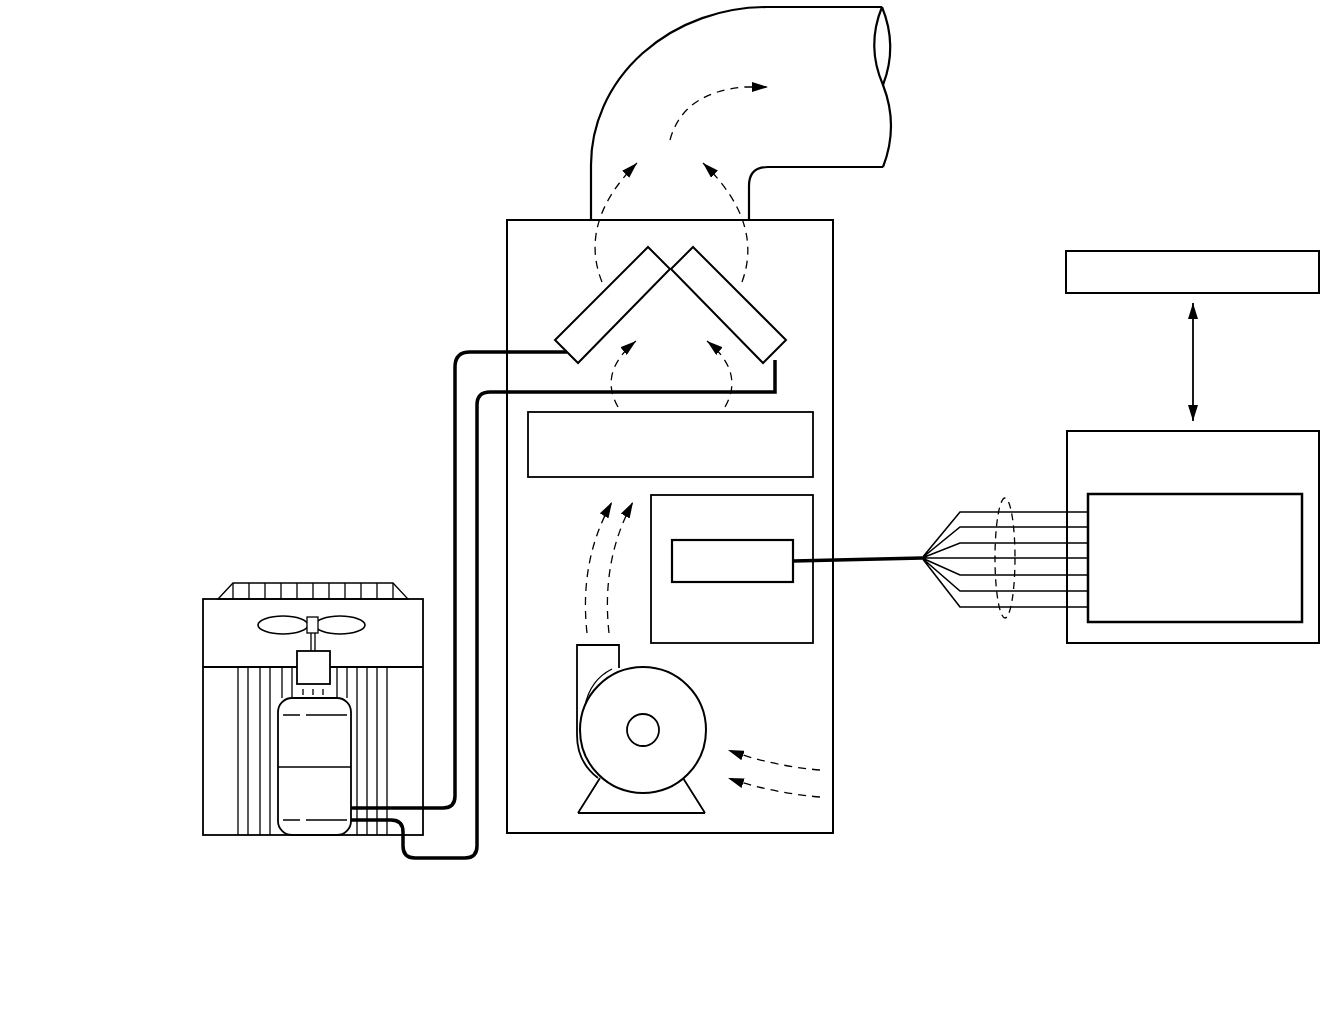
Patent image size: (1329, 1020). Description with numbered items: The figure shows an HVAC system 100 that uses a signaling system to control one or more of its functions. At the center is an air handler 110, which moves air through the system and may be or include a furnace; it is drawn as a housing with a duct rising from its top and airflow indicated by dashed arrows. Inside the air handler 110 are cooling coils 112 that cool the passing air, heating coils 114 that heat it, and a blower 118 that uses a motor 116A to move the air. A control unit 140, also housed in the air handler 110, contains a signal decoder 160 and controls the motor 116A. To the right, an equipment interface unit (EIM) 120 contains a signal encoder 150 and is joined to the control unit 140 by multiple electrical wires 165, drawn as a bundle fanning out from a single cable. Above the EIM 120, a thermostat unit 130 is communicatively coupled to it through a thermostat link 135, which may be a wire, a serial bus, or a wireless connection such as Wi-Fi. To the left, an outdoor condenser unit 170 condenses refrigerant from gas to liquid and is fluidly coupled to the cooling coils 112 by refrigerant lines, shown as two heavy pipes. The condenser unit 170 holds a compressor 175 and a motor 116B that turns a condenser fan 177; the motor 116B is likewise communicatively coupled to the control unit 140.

The HVAC system 100 is at (336, 131).
The air handler 110 is at (500, 278).
The cooling coils 112 is at (583, 311).
The heating coils 114 is at (651, 459).
The motor 116A is at (640, 730).
The motor 116B is at (297, 660).
The blower 118 is at (592, 760).
The equipment interface unit (EIM) 120 is at (1130, 429).
The thermostat unit 130 is at (1203, 250).
The thermostat link 135 is at (1196, 362).
The control unit 140 is at (733, 645).
The signal encoder 150 is at (1176, 590).
The signal decoder 160 is at (733, 583).
The electrical wires 165 is at (1007, 620).
The condenser unit 170 is at (192, 735).
The compressor 175 is at (293, 806).
The condenser fan 177 is at (292, 617).